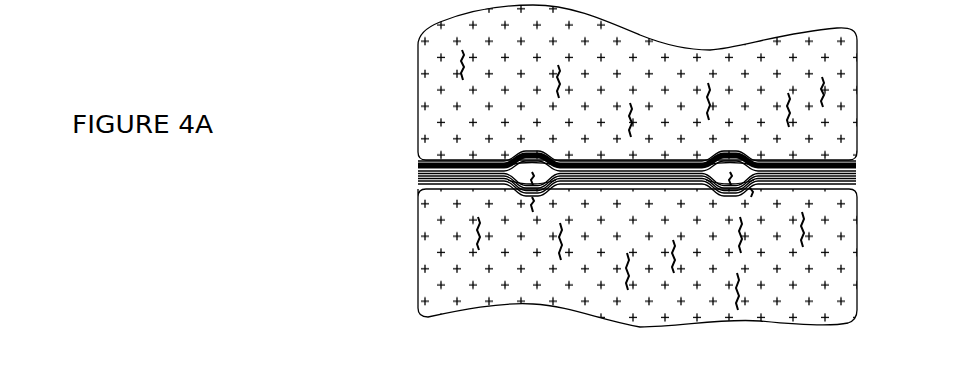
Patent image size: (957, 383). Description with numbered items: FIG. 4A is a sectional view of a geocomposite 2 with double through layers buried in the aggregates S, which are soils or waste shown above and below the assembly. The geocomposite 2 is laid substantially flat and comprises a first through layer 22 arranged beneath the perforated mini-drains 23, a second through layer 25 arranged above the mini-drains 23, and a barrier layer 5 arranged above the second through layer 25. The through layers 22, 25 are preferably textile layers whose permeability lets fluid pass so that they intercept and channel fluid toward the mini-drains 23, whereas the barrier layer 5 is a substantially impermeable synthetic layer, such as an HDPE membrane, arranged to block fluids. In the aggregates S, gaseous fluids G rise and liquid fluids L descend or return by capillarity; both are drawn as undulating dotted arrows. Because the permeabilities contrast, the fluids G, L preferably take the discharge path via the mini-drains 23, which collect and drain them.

The geocomposite 2 is at (587, 154).
The barrier layer 5 is at (418, 166).
The through layer 22 is at (418, 176).
The perforated mini-drains 23 is at (517, 157).
The second through layer 25 is at (418, 181).
The aggregates S is at (438, 278).
The gaseous fluids G is at (740, 288).
The liquid fluids L is at (740, 250).